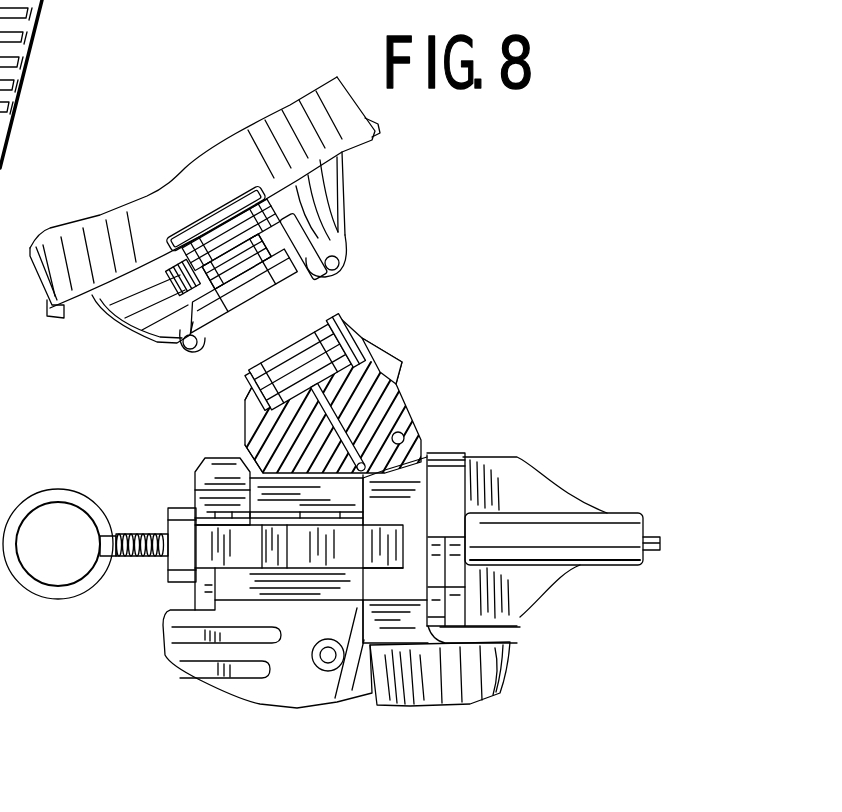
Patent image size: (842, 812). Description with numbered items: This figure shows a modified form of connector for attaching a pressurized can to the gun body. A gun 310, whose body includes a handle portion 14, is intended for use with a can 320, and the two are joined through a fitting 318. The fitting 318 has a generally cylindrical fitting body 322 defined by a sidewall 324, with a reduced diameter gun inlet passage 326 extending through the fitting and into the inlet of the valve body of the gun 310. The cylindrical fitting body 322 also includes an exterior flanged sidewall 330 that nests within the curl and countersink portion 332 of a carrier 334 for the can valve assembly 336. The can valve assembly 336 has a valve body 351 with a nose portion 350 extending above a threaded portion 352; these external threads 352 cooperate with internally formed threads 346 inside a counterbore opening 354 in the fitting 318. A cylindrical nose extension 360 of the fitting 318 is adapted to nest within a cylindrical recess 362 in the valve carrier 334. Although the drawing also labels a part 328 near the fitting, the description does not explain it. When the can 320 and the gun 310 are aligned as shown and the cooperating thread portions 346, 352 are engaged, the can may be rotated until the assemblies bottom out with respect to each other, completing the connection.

The handle portion 14 is at (25, 47).
The gun 310 is at (328, 547).
The fitting 318 is at (402, 343).
The can 320 is at (385, 147).
The fitting body 322 is at (352, 442).
The sidewall 324 is at (420, 467).
The gun inlet passage 326 is at (290, 470).
The block left wall 328 is at (262, 428).
The exterior flanged sidewall 330 is at (380, 364).
The curl and countersink portion 332 is at (327, 272).
The carrier 334 is at (302, 206).
The can valve assembly 336 is at (207, 211).
The internally formed threads 346 is at (330, 350).
The nose portion 350 is at (257, 328).
The valve body 351 is at (300, 228).
The threaded portion 352 is at (210, 340).
The counterbore opening 354 is at (308, 340).
The cylindrical nose extension 360 is at (268, 375).
The cylindrical recess 362 is at (172, 284).